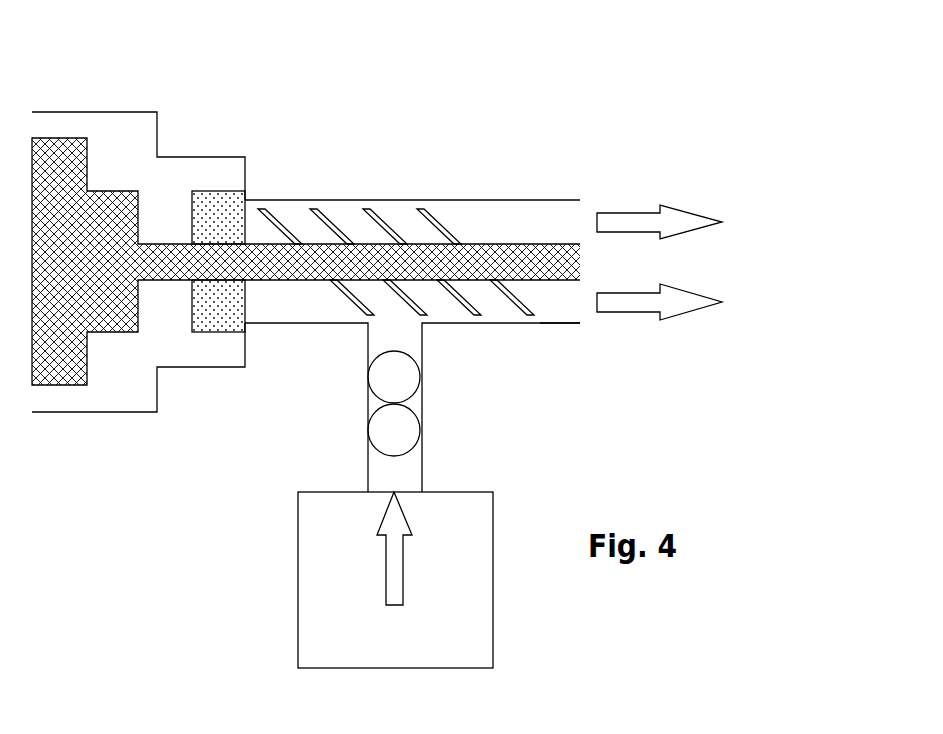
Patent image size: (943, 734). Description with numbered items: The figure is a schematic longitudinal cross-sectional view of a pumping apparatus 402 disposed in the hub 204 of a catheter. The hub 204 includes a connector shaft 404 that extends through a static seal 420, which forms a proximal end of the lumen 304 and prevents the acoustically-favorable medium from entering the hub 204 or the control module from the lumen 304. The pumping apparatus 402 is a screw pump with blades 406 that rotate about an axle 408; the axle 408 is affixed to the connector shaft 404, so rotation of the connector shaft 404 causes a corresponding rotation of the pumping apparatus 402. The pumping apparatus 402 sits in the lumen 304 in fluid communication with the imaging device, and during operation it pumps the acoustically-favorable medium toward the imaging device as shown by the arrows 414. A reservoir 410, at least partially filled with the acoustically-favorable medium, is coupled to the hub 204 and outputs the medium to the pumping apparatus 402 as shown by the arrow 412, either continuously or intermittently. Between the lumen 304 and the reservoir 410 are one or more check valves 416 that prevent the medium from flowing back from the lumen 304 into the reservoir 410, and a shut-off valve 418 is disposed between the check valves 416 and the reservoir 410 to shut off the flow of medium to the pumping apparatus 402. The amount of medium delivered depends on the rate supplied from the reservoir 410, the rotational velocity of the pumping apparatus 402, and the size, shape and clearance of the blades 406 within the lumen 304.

The hub 204 is at (462, 86).
The connector shaft 404 is at (108, 190).
The seal 420 is at (218, 197).
The pumping apparatus 402 is at (466, 216).
The axle 408 is at (310, 243).
The blades 406 is at (378, 220).
The arrows 414 is at (630, 212).
The lumen 304 is at (550, 312).
The check valves 416 is at (417, 378).
The shut-off valve 418 is at (412, 432).
The reservoir 410 is at (298, 520).
The arrow 412 is at (385, 578).